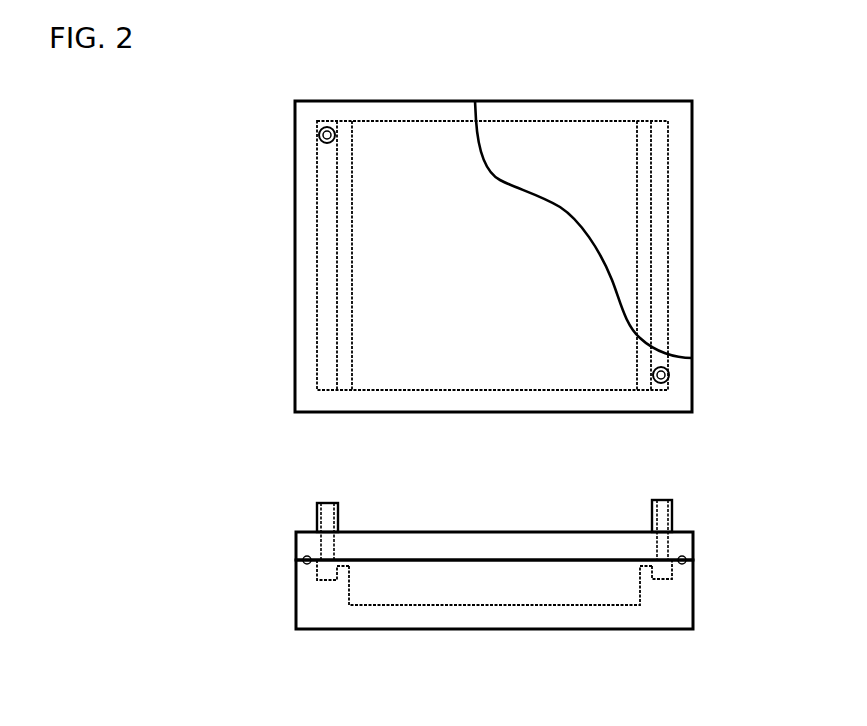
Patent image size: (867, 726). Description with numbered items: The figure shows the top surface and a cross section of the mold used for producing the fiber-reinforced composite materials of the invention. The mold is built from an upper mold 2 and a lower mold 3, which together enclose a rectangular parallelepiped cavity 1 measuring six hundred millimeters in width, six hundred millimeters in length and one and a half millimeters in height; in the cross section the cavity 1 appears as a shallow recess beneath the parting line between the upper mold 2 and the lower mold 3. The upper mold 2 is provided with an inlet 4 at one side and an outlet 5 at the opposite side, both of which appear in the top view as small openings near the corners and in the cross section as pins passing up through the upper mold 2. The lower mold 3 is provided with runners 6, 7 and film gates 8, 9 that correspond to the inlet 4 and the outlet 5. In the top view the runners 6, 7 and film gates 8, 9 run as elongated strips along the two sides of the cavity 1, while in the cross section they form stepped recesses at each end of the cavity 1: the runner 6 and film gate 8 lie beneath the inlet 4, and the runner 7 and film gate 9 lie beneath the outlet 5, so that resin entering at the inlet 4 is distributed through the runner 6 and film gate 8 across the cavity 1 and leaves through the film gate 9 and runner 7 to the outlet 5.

The cavity 1 is at (580, 165).
The upper mold 2 is at (695, 543).
The lower mold 3 is at (695, 610).
The inlet 4 is at (320, 134).
The outlet 5 is at (672, 375).
The runner 6 is at (327, 189).
The runner 7 is at (658, 242).
The film gate 8 is at (342, 287).
The film gate 9 is at (645, 293).